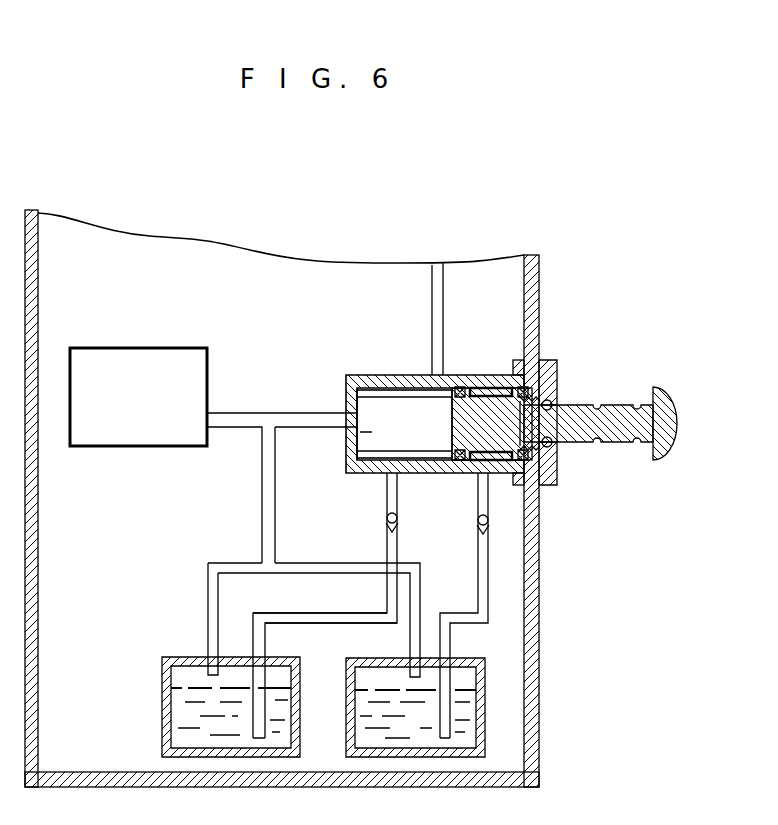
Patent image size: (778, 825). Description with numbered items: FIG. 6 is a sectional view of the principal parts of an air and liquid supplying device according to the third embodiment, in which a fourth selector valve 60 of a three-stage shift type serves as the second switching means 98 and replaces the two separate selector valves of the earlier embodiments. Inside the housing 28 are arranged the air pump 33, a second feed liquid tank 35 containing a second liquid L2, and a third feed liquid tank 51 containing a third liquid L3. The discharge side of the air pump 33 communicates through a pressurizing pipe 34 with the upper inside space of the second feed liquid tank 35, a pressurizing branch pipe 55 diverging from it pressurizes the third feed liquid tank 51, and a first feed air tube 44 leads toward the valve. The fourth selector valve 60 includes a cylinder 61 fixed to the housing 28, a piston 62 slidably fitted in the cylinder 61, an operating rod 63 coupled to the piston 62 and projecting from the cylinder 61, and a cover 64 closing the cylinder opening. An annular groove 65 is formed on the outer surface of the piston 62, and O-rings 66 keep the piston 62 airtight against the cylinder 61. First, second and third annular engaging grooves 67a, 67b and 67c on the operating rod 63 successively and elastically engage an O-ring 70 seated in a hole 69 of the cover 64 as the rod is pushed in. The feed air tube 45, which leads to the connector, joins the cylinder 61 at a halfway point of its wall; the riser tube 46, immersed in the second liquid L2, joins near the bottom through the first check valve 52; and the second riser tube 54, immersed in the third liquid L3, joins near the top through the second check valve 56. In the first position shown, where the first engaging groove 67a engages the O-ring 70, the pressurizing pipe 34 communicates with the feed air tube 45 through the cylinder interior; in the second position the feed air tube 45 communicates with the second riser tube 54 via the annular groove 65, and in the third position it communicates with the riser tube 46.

The housing 28 is at (540, 632).
The air pump 33 is at (115, 446).
The pressurizing pipe 34 is at (240, 427).
The first feed air tube 44 is at (312, 427).
The feed air tube 45 is at (432, 318).
The riser tube 46 is at (318, 615).
The third feed liquid tank 51 is at (488, 728).
The first check valve 52 is at (385, 518).
The second riser tube 54 is at (470, 605).
The pressurizing branch pipe 55 is at (361, 605).
The second check valve 56 is at (476, 526).
The second feed liquid tank 35 is at (162, 718).
The fourth selector valve 60 is at (553, 332).
The cylinder 61 is at (366, 378).
The piston 62 is at (452, 433).
The operating rod 63 is at (670, 403).
The cover 64 is at (552, 486).
The annular groove 65 is at (493, 388).
The O-rings 66 is at (462, 462).
The first annular engaging groove 67a is at (568, 405).
The second annular engaging groove 67b is at (597, 446).
The third annular engaging groove 67c is at (637, 401).
The hole 69 is at (553, 399).
The O-ring 70 is at (553, 448).
The second switching means 98 is at (606, 503).
The second liquid L2 is at (185, 687).
The third liquid L3 is at (462, 688).